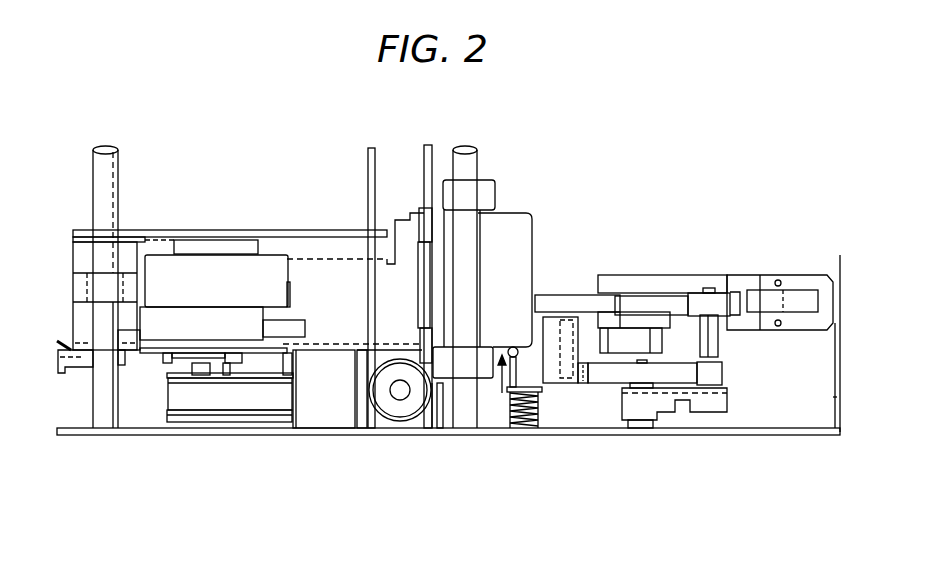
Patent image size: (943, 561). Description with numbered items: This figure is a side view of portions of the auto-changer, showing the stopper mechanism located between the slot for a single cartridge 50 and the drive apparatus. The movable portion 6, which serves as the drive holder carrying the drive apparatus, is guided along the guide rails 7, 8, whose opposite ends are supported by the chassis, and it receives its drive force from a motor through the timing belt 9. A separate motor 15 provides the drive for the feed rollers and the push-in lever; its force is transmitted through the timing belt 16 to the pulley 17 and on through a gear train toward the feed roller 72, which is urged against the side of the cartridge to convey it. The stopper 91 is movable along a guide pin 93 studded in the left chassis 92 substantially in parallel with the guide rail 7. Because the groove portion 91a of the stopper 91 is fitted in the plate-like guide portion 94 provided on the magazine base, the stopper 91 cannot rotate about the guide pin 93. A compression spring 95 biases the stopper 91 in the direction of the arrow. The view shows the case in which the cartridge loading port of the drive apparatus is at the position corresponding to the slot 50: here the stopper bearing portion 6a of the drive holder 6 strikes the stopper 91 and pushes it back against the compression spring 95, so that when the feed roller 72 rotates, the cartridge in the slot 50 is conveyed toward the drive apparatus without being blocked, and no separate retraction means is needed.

The movable portion 6 is at (323, 283).
The stopper bearing portion 6a is at (507, 345).
The guide rail 7 is at (458, 162).
The guide rail 8 is at (108, 188).
The timing belt 9 is at (427, 288).
The motor 15 is at (160, 325).
The timing belt 16 is at (187, 400).
The pulley 17 is at (257, 417).
The slot for a single cartridge 50 is at (600, 297).
The feed roller 72 is at (718, 300).
The stopper 91 is at (552, 375).
The groove portion 91a is at (570, 320).
The left chassis 92 is at (797, 430).
The guide pin 93 is at (523, 413).
The plate-like guide portion 94 is at (588, 328).
The compression spring 95 is at (543, 415).